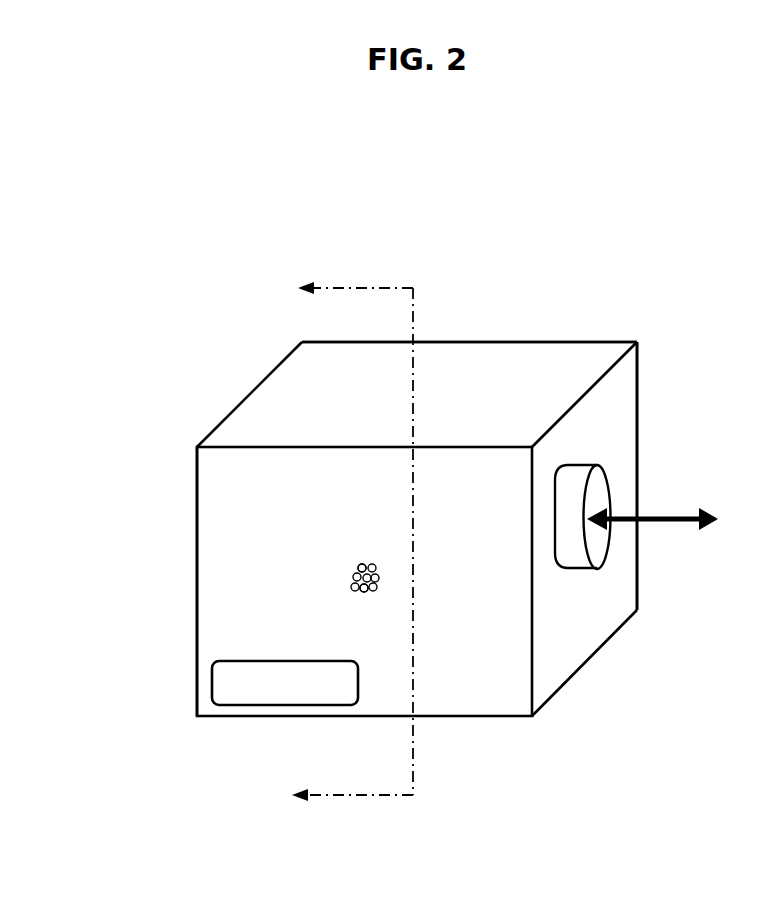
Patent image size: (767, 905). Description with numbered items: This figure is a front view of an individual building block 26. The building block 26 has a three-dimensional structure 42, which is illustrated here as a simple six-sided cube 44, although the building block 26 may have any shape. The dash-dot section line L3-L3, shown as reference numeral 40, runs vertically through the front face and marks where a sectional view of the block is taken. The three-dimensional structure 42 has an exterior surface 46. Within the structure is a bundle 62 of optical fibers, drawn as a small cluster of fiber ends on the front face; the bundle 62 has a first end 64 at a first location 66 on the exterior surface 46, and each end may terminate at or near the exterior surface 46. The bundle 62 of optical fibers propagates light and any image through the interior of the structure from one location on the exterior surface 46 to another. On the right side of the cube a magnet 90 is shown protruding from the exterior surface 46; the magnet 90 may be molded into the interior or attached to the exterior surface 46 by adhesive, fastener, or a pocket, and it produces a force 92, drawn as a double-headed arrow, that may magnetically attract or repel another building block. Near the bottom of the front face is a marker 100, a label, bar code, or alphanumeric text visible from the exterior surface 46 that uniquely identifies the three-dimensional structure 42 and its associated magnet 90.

The building block 26 is at (110, 298).
The line L3-L3 40 is at (362, 288).
The three-dimensional structure 42 is at (197, 480).
The six-sided cube 44 is at (638, 343).
The exterior surface 46 is at (480, 372).
The bundle of optical fibers 62 is at (347, 580).
The first end 64 is at (347, 590).
The first location 66 is at (357, 560).
The magnet 90 is at (603, 492).
The force 92 is at (679, 527).
The marker 100 is at (212, 683).